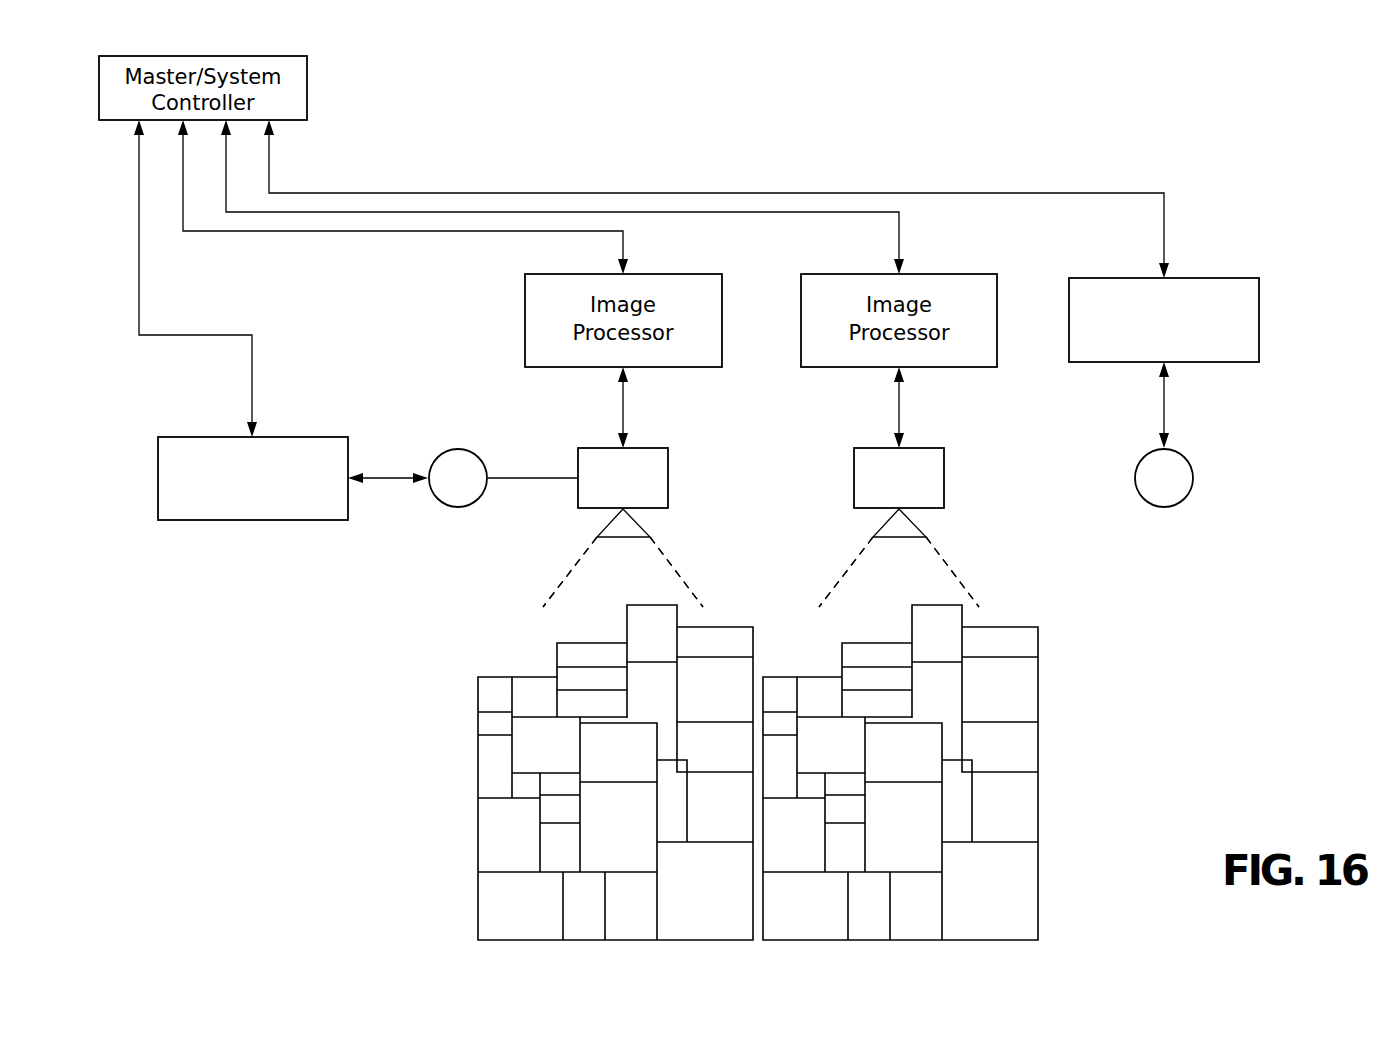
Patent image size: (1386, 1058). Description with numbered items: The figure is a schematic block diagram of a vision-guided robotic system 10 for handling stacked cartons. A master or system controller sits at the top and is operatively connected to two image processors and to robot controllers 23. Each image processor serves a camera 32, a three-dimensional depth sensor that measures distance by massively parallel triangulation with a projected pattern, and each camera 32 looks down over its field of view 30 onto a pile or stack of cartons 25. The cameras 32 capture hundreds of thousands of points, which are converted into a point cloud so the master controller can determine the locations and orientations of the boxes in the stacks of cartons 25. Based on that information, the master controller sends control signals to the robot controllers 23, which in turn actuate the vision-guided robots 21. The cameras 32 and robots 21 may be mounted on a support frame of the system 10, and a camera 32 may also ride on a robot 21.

The system 10 is at (1120, 118).
The vision-guided robot 21 is at (480, 460).
The controller 23 is at (282, 437).
The pile or stack of cartons 25 is at (478, 741).
The field of view 30 is at (672, 565).
The camera 32 is at (644, 448).